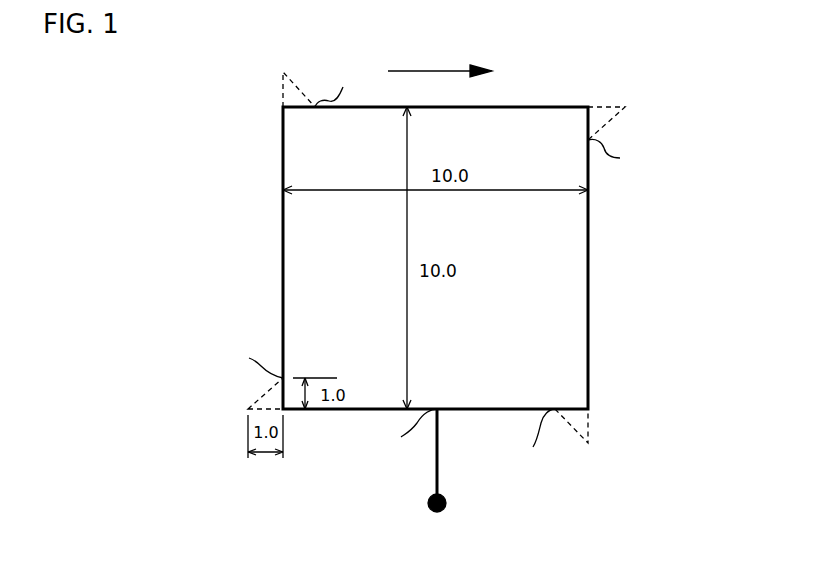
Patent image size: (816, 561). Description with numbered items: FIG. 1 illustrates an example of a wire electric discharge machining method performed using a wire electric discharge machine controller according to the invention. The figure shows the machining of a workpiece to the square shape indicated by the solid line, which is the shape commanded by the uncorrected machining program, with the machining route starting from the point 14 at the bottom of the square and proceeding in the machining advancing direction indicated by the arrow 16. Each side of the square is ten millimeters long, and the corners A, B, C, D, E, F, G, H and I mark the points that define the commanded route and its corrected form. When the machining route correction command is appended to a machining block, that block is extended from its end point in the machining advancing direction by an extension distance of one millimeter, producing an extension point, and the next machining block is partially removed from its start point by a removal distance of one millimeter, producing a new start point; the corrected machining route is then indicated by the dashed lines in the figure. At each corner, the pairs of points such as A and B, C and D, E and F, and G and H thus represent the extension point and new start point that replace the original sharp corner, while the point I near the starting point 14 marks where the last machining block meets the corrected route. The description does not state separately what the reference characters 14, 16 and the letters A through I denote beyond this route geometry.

The ground point / terminal 14 is at (430, 503).
The scan direction arrow 16 is at (422, 71).
The point A is at (248, 408).
The point B is at (257, 352).
The point C is at (284, 72).
The point D is at (333, 76).
The point E is at (619, 107).
The point F is at (615, 155).
The point G is at (588, 443).
The point H is at (543, 440).
The point I is at (413, 431).